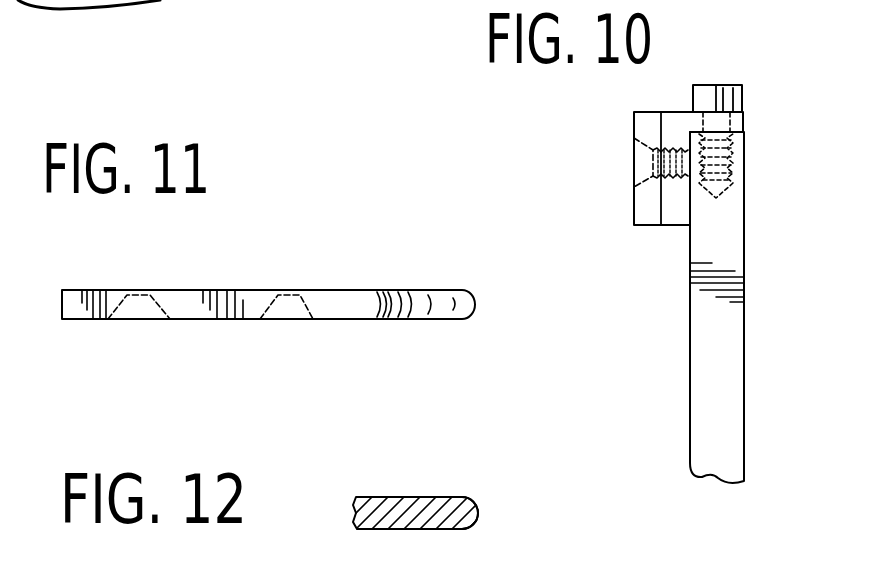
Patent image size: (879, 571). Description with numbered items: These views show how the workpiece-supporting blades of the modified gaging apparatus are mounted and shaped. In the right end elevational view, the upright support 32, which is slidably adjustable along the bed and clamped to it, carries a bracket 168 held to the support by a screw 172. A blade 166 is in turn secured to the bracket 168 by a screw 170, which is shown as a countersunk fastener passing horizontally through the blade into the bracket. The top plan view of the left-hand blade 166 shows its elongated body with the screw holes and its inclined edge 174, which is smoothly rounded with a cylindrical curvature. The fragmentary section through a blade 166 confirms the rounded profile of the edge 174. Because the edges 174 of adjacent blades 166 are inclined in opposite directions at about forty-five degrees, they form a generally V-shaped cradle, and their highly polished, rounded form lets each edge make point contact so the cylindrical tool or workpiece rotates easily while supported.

In FIG. 10, the second upright support 32 is at (705, 343).
In FIG. 11, the second upright support 32 is at (325, 0).
In FIG. 10, the blade 166 is at (647, 122).
In FIG. 11, the blade 166 is at (360, 320).
In FIG. 12, the blade 166 is at (425, 497).
In FIG. 10, the bracket 168 is at (677, 219).
In FIG. 10, the screw 170 is at (634, 163).
In FIG. 10, the screw 172 is at (705, 85).
In FIG. 11, the inclined edge 174 is at (468, 302).
In FIG. 12, the inclined edge 174 is at (480, 509).